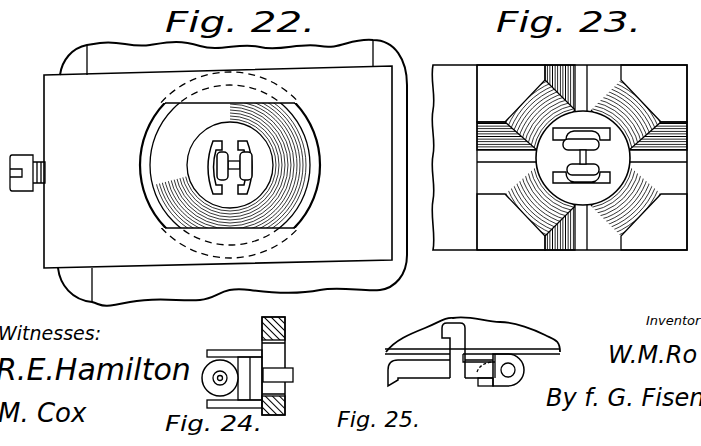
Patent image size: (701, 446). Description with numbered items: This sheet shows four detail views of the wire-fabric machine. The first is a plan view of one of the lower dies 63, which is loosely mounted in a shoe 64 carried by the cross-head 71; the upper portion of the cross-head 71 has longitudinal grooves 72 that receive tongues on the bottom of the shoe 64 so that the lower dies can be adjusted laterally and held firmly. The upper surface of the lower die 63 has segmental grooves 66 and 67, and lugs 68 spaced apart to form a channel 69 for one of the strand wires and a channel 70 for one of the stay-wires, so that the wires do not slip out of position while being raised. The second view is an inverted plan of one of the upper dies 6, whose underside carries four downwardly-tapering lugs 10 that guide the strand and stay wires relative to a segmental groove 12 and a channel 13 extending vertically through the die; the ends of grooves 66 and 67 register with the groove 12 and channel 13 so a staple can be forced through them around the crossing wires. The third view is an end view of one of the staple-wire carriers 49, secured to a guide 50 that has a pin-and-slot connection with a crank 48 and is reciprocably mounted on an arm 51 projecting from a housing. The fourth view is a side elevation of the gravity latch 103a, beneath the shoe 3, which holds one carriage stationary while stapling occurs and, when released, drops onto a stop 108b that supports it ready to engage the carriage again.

In FIG. 22, the cross-head 71 is at (72, 62).
In FIG. 22, the longitudinal grooves 72 is at (390, 277).
In FIG. 22, the shoe 64 is at (315, 282).
In FIG. 22, the lower die 63 is at (237, 222).
In FIG. 22, the lugs 68 is at (252, 145).
In FIG. 22, the segmental groove 67 is at (256, 167).
In FIG. 22, the segmental groove 66 is at (219, 166).
In FIG. 22, the channel 69 is at (215, 168).
In FIG. 22, the channel 70 is at (198, 205).
In FIG. 23, the upper die 6 is at (510, 243).
In FIG. 23, the downwardly-tapering lugs 10 is at (582, 157).
In FIG. 23, the segmental groove 12 is at (582, 140).
In FIG. 23, the channel 13 is at (590, 172).
In FIG. 24, the crank 48 is at (287, 335).
In FIG. 24, the staple-wire carrier 49 is at (209, 369).
In FIG. 24, the guide 50 is at (213, 352).
In FIG. 24, the arm 51 is at (247, 362).
In FIG. 25, the shoe 3 is at (505, 332).
In FIG. 25, the gravity latch 103a is at (428, 370).
In FIG. 25, the stop 108b is at (485, 386).